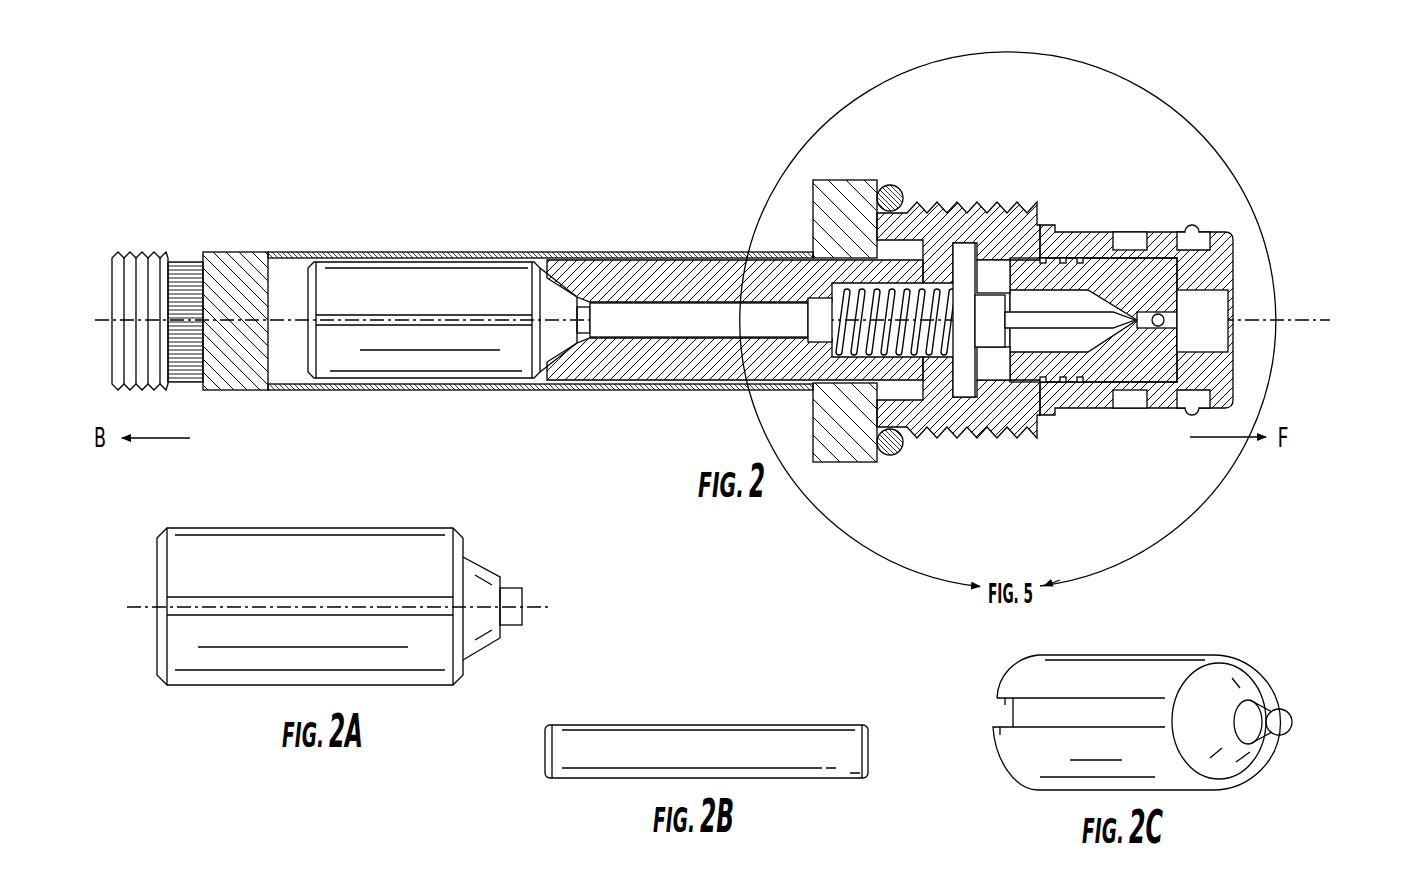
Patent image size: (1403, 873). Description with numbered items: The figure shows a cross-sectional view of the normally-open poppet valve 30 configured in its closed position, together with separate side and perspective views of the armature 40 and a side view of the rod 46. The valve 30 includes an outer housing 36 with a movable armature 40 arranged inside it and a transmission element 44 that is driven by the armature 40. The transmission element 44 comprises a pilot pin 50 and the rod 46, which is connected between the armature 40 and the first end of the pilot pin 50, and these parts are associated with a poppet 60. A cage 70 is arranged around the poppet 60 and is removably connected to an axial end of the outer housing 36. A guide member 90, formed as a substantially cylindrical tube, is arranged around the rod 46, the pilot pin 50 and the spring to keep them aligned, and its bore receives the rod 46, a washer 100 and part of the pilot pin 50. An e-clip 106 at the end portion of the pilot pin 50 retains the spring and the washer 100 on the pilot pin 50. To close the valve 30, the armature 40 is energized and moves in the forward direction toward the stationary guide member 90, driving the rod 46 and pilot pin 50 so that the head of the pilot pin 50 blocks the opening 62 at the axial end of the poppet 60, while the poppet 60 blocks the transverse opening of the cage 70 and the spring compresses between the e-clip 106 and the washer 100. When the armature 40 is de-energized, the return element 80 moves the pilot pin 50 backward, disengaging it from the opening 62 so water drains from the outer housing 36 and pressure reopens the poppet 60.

In FIG. 2, the normally-open poppet valve 30 is at (1132, 302).
In FIG. 2, the outer housing 36 is at (230, 282).
In FIG. 2, the armature 40 is at (402, 290).
In FIG. 2A, the armature 40 is at (349, 516).
In FIG. 2C, the armature 40 is at (1159, 643).
In FIG. 2, the transmission element 44 is at (1268, 264).
In FIG. 2, the rod 46 is at (640, 325).
In FIG. 2B, the rod 46 is at (703, 716).
In FIG. 2, the pilot pin 50 is at (1040, 342).
In FIG. 2, the poppet 60 is at (1073, 277).
In FIG. 2, the opening 62 is at (1165, 318).
In FIG. 2, the cage 70 is at (1220, 260).
In FIG. 2, the return element 80 is at (910, 280).
In FIG. 2, the guide member 90 is at (628, 283).
In FIG. 2, the washer 100 is at (962, 368).
In FIG. 2, the e-clip 106 is at (832, 282).